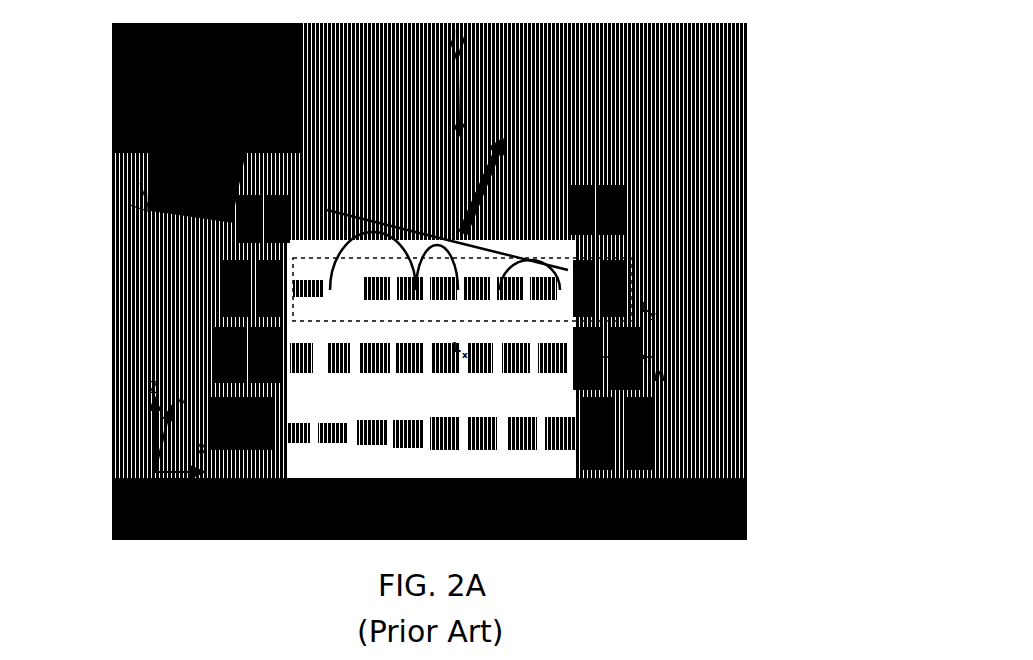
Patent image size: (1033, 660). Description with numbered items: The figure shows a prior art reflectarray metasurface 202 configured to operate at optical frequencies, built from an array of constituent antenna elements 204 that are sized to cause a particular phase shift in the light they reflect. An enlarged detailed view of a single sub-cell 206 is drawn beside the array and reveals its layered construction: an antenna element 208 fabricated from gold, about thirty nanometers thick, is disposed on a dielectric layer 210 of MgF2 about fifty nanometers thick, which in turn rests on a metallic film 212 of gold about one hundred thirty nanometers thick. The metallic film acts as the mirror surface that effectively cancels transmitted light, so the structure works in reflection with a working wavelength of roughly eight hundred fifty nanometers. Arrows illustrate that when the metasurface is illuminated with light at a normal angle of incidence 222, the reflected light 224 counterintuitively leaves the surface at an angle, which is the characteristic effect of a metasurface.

The metasurface 202 is at (738, 400).
The antenna elements 204 is at (652, 458).
The sub-cell 206 is at (138, 140).
The antenna element 208 is at (192, 77).
The dielectric layer 210 is at (175, 127).
The metallic film 212 is at (160, 162).
The normal angle of incidence 222 is at (460, 82).
The reflected light 224 is at (492, 173).